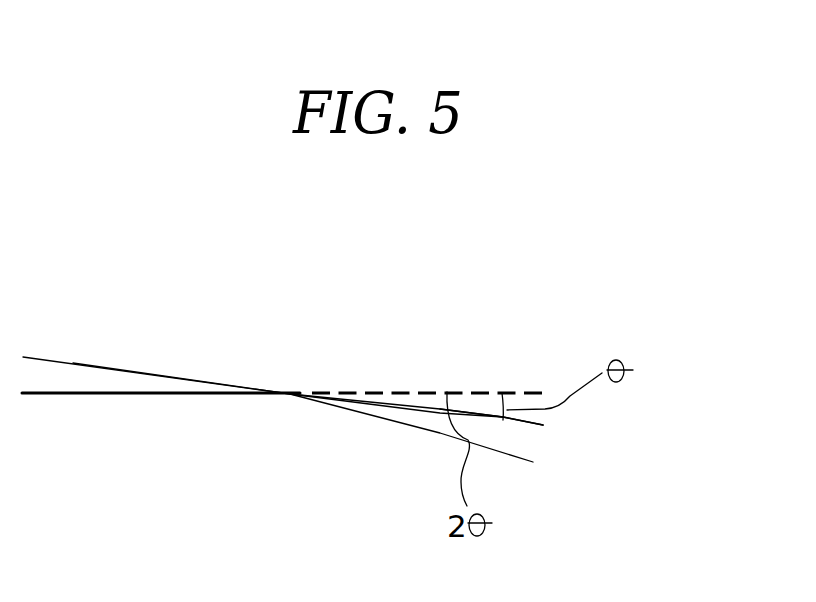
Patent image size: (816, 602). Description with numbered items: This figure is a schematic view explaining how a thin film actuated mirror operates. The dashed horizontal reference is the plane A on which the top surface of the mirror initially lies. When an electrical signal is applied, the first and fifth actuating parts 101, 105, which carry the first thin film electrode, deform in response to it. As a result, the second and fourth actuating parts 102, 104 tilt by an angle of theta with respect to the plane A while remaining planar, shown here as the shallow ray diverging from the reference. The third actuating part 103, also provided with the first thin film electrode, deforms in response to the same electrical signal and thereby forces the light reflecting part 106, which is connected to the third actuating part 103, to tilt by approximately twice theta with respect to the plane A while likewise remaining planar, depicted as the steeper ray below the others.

The plane A is at (531, 392).
The second actuating part 102 is at (283, 349).
The fourth actuating part 104 is at (86, 362).
The first actuating part 101 is at (605, 438).
The fifth actuating part 105 is at (522, 423).
The third actuating part 103 is at (454, 483).
The light reflecting part 106 is at (500, 452).